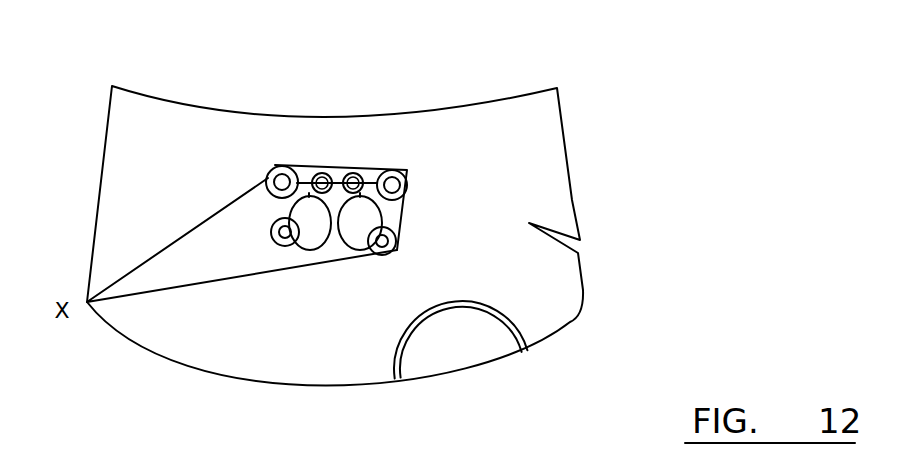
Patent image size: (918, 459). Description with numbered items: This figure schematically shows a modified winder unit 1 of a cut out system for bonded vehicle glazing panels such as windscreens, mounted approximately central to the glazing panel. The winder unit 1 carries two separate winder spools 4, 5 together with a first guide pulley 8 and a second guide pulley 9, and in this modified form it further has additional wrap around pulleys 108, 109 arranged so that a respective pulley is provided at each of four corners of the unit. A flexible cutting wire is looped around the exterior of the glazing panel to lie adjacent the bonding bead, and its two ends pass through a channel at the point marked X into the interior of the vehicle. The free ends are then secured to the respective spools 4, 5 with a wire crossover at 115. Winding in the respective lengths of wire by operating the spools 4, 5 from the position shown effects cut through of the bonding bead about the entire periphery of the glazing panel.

The winder unit 1 is at (424, 208).
The winder spool 4 is at (353, 172).
The winder spool 5 is at (320, 172).
The guide pulley 8 is at (274, 165).
The guide pulley 9 is at (396, 170).
The wrap around pulley 108 is at (285, 246).
The wrap around pulley 109 is at (396, 242).
The wire crossover 115 is at (344, 147).